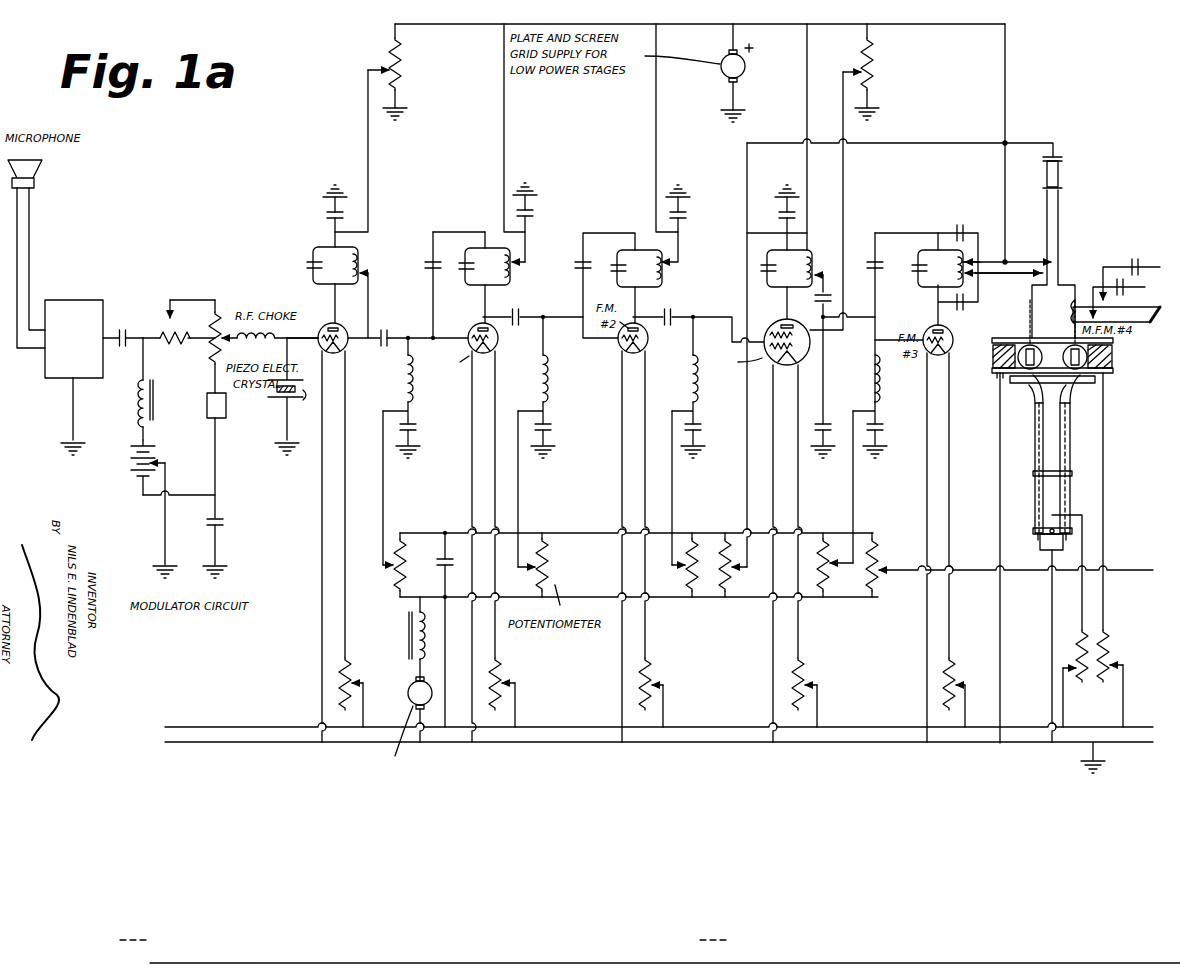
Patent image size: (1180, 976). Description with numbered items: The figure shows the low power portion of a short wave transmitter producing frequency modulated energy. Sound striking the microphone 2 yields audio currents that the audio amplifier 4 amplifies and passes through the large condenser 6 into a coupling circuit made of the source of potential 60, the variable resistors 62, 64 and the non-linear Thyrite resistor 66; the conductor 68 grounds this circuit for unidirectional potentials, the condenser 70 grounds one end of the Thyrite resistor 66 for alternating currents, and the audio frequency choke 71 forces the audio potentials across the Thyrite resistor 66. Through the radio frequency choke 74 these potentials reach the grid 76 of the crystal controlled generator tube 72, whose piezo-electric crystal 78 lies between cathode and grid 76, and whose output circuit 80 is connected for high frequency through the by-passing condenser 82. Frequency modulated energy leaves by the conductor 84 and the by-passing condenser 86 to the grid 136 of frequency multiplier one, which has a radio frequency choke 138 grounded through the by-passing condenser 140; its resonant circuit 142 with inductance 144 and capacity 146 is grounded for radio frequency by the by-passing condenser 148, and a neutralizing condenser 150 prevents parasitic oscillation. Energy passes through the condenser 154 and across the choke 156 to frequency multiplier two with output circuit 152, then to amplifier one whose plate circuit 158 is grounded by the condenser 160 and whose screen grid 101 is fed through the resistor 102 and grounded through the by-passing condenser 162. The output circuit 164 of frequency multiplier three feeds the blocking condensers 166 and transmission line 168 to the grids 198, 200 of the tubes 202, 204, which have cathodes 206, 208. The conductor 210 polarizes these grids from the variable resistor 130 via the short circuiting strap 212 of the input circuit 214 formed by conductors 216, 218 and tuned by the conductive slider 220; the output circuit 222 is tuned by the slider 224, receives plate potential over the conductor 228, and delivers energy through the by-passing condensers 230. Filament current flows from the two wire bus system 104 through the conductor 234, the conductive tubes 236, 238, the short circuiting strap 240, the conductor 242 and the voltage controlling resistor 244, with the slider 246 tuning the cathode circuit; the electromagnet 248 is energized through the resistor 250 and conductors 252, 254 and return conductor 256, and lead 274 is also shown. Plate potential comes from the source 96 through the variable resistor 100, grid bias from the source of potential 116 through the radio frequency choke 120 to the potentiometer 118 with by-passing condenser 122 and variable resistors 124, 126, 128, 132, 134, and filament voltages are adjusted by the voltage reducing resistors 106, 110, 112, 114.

The microphone 2 is at (40, 171).
The audio amplifier 4 is at (67, 300).
The large condenser 6 is at (125, 326).
The variable resistor 62 is at (167, 343).
The variable resistor 64 is at (220, 318).
The radio frequency choke 74 is at (260, 340).
The piezo-electric crystal 78 is at (291, 396).
The Thyrite resistor 66 is at (232, 438).
The condenser 70 is at (225, 527).
The audio frequency choke 71 is at (153, 401).
The source of potential 60 is at (155, 449).
The conductor 68 is at (165, 527).
The variable resistor 100 is at (402, 70).
The source 96 is at (722, 78).
The resistor 102 is at (874, 68).
The conductor 228 is at (807, 91).
The by-passing condenser 82 is at (327, 218).
The output circuit 80 is at (313, 246).
The conductor 84 is at (378, 296).
The by-passing condenser 86 is at (389, 330).
The grid 76 is at (324, 326).
The crystal controlled generator tube 72 is at (347, 346).
The by-passing condenser 148 is at (533, 216).
The condenser 150 is at (428, 260).
The capacity 146 is at (460, 260).
The inductance 144 is at (514, 277).
The resonant circuit 142 is at (476, 282).
The grid 136 is at (498, 346).
The condenser 154 is at (518, 315).
The radio frequency choke 138 is at (414, 382).
The by-passing condenser 140 is at (418, 428).
The choke 156 is at (547, 376).
The output circuit 152 is at (655, 280).
The condenser 160 is at (776, 220).
The plate circuit 158 is at (776, 283).
The screen grid 101 is at (765, 322).
The by-passing condenser 162 is at (824, 420).
The blocking condensers 166 is at (965, 228).
The output circuit 164 is at (926, 286).
The transmission line 168 is at (1024, 274).
The conductor 210 is at (1020, 143).
The short circuiting strap 212 is at (1062, 157).
The input circuit 214 is at (1060, 165).
The conductor 216 is at (1066, 190).
The conductive slider 220 is at (1044, 190).
The conductor 218 is at (1064, 211).
The by-passing condensers 230 is at (1123, 262).
The output circuit 222 is at (1072, 306).
The slider 224 is at (1140, 307).
The tube 202 is at (992, 358).
The tube 204 is at (1114, 358).
The grid 198 is at (1028, 372).
The grid 200 is at (1082, 370).
The electromagnet 248 is at (993, 380).
The cathode 206 is at (1030, 411).
The conductor 254 is at (1054, 395).
The cathode 208 is at (1088, 384).
The slider 246 is at (1034, 478).
The conductive tube 236 is at (1036, 513).
The conductive tube 238 is at (1070, 496).
The short circuiting strap 240 is at (1033, 530).
The lead 274 is at (972, 565).
The conductor 234 is at (1051, 587).
The return conductor 256 is at (998, 637).
The conductor 252 is at (1120, 594).
The conductor 242 is at (1082, 610).
The voltage controlling resistor 244 is at (1075, 648).
The resistor 250 is at (1116, 652).
The potentiometer 118 is at (598, 546).
The variable resistor 124 is at (392, 582).
The by-passing condenser 122 is at (436, 564).
The variable resistor 126 is at (550, 560).
The variable resistor 128 is at (684, 586).
The variable resistor 130 is at (730, 580).
The variable resistor 132 is at (830, 572).
The variable resistor 134 is at (882, 586).
The radio frequency choke 120 is at (404, 636).
The source of potential 116 is at (408, 693).
The voltage reducing resistor 106 is at (350, 672).
The voltage reducing resistor 110 is at (656, 671).
The voltage reducing resistor 112 is at (804, 670).
The voltage reducing resistor 114 is at (953, 670).
The two wire bus system 104 is at (528, 744).